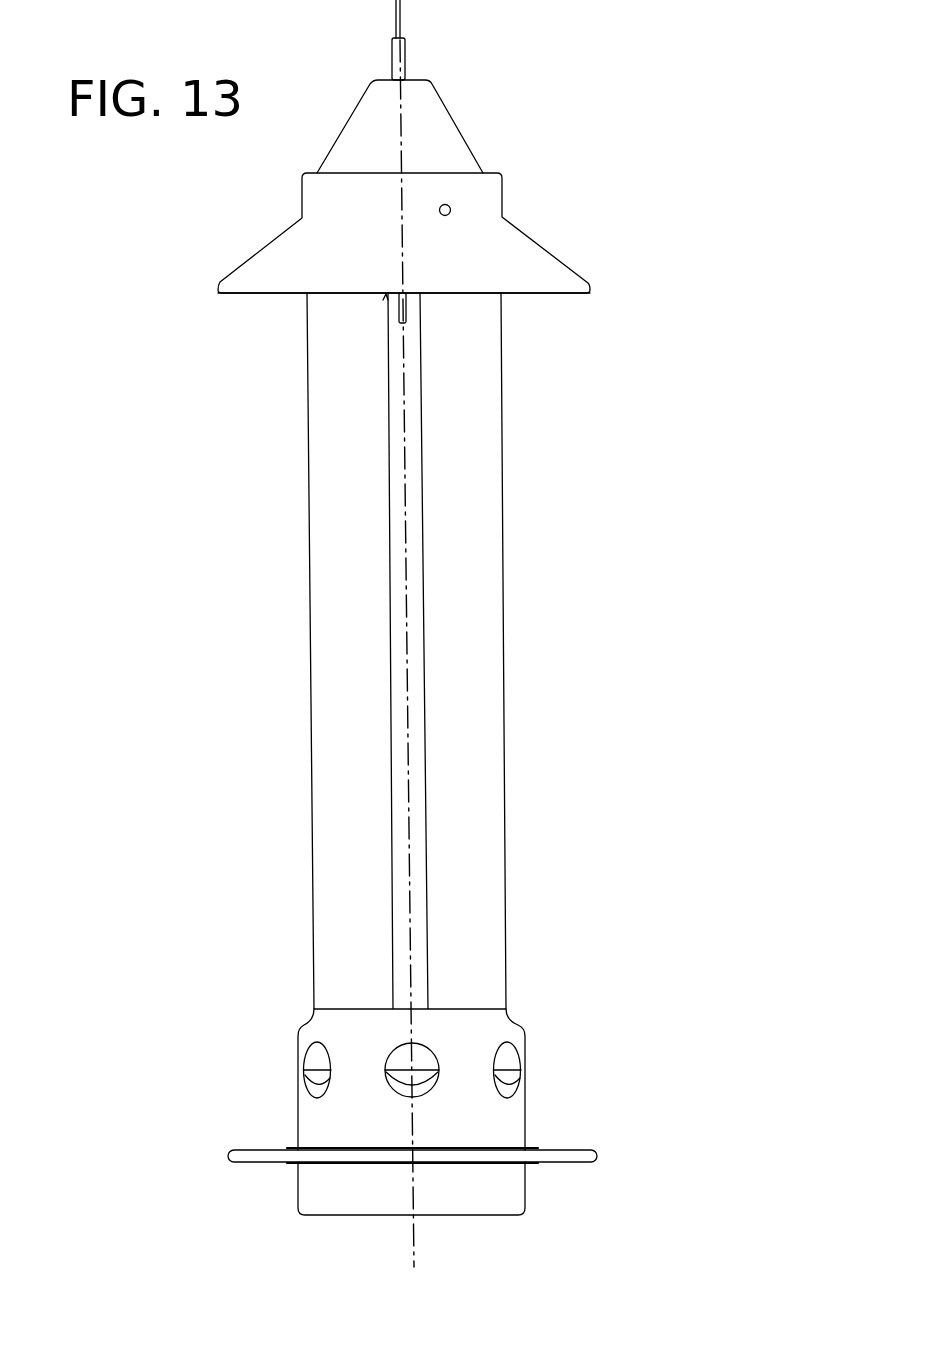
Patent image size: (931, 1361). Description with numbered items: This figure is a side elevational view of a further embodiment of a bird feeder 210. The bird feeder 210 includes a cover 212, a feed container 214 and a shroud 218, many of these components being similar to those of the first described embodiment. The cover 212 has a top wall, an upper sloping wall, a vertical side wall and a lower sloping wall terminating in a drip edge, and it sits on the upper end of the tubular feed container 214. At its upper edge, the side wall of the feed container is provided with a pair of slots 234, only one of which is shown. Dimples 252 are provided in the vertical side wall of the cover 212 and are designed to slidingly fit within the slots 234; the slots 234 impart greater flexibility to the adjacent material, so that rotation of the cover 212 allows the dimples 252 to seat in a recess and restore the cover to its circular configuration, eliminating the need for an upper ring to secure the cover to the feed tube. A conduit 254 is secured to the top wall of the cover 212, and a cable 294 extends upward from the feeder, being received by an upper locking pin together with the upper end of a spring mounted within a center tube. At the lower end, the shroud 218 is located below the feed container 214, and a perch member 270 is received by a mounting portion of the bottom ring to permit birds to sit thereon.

The bird feeder 210 is at (702, 226).
The cover 212 is at (534, 192).
The feed container 214 is at (535, 600).
The shroud 218 is at (540, 1122).
The slot 234 is at (406, 312).
The dimple 252 is at (451, 212).
The conduit 254 is at (405, 68).
The perch member 270 is at (602, 1162).
The cable 294 is at (397, 12).